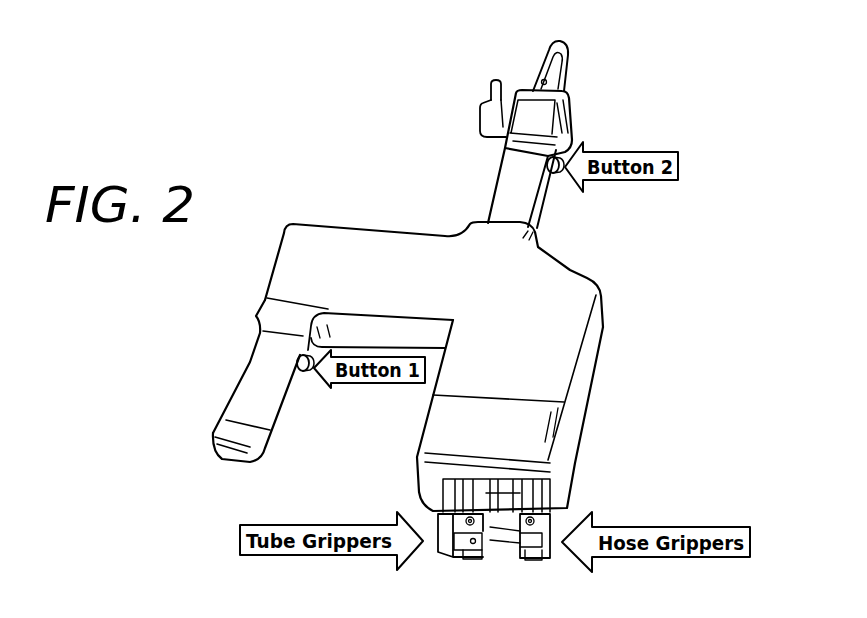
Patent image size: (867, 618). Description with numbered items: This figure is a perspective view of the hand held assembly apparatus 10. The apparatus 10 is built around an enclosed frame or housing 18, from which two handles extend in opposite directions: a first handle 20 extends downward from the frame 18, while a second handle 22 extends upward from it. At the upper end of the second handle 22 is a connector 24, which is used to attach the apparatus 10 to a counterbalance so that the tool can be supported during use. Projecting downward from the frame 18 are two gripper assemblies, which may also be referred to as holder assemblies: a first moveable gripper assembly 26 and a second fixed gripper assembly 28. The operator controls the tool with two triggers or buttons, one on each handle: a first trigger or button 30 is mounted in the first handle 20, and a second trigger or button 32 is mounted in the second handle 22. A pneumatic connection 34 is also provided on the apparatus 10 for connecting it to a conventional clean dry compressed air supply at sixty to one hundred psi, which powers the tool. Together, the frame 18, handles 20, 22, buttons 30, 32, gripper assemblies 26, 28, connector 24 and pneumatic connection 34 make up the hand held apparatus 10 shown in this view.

The apparatus 10 is at (600, 83).
The frame 18 is at (275, 261).
The first handle 20 is at (238, 388).
The second handle 22 is at (495, 180).
The connector 24 is at (563, 44).
The first moveable gripper assembly 26 is at (540, 559).
The second fixed gripper assembly 28 is at (470, 559).
The first trigger or button 30 is at (309, 372).
The second trigger or button 32 is at (561, 174).
The pneumatic connection 34 is at (478, 107).